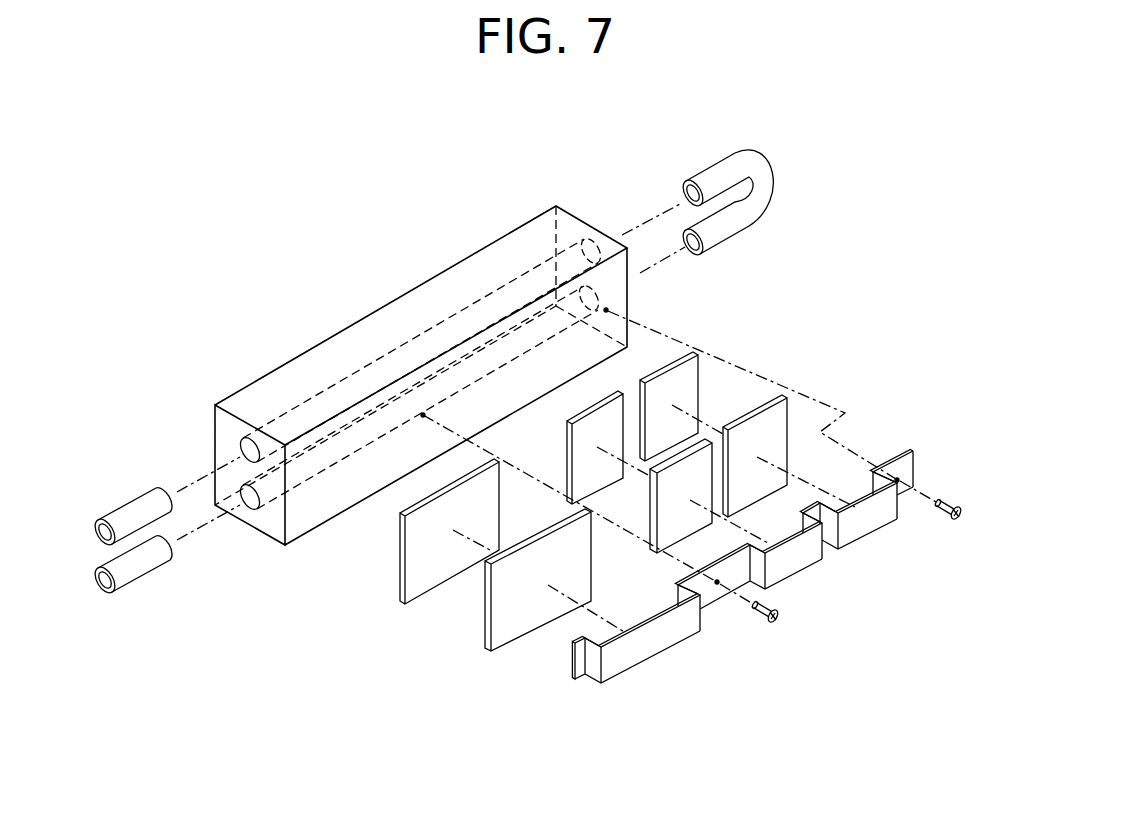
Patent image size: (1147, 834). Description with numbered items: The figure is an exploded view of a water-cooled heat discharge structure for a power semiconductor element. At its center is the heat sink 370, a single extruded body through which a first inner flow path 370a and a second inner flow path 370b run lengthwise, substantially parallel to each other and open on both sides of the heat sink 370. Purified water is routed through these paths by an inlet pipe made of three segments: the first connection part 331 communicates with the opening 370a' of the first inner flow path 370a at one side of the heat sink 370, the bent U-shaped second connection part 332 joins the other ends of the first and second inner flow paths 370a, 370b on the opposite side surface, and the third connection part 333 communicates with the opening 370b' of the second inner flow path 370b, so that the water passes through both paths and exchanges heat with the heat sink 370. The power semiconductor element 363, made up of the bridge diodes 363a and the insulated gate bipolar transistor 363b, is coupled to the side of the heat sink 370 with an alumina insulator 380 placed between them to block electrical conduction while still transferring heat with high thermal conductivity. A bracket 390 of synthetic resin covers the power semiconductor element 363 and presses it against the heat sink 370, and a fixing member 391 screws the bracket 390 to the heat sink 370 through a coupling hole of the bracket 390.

The heat sink 370 is at (327, 361).
The first inner flow path 370a is at (418, 350).
The second inner flow path 370b is at (420, 436).
The opening of the first inner flow path 370a' is at (194, 432).
The opening of the second inner flow path 370b' is at (242, 531).
The first connection part 331 is at (133, 509).
The third connection part 333 is at (152, 580).
The second connection part 332 is at (742, 168).
The insulator 380 is at (473, 497).
The power semiconductor element 363 is at (570, 562).
The bridge diodes 363a is at (517, 602).
The insulated gate bipolar transistor 363b is at (753, 487).
The bracket 390 is at (650, 643).
The fixing member 391 is at (782, 618).